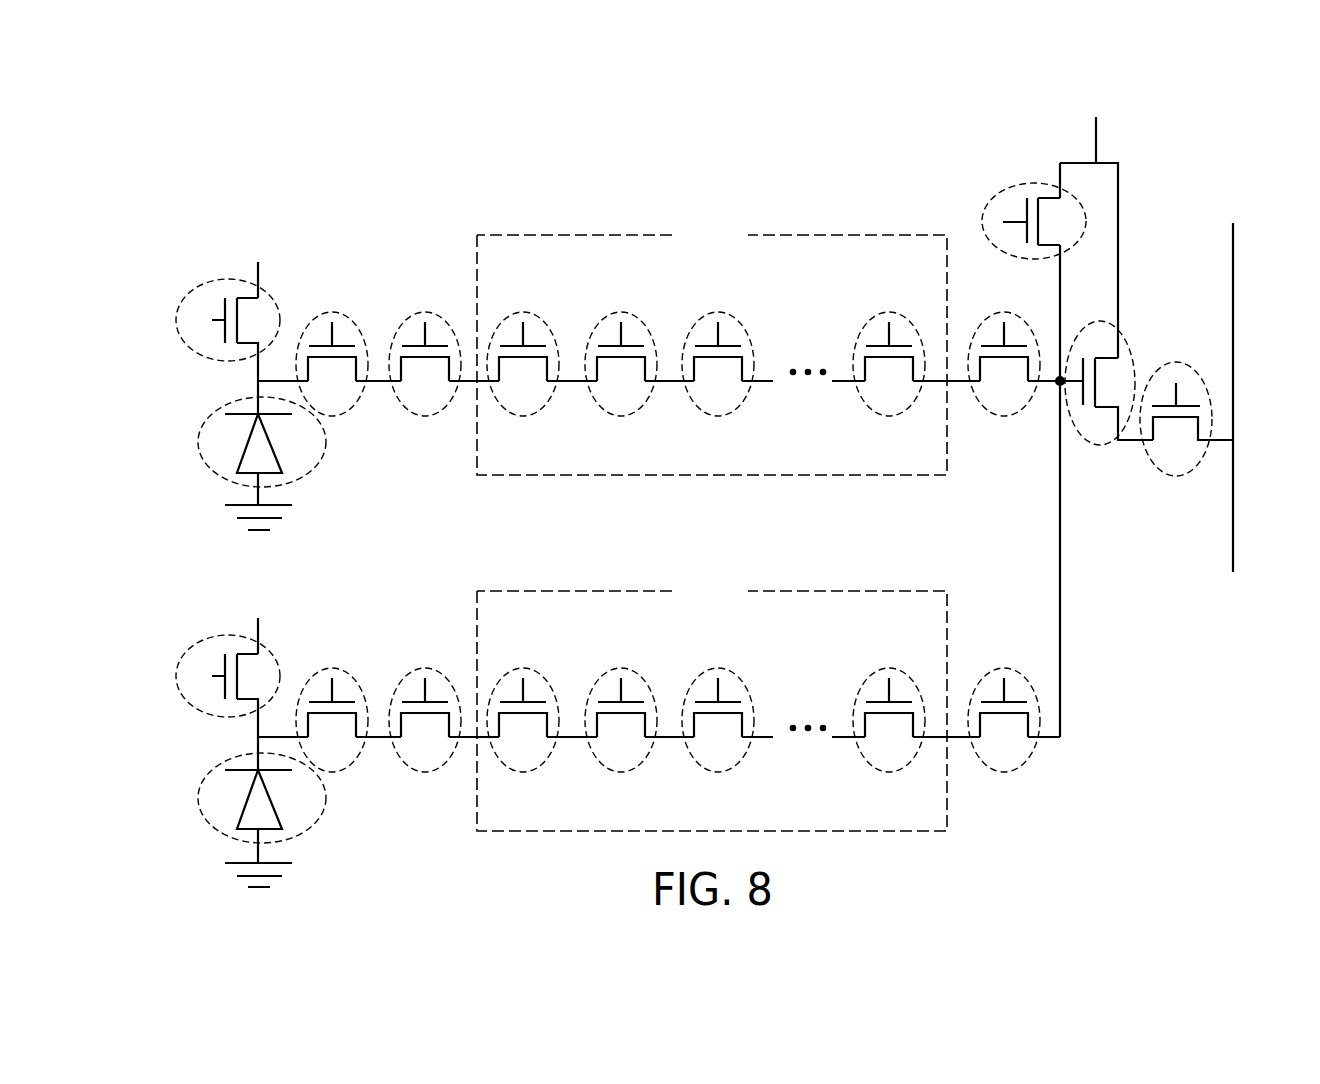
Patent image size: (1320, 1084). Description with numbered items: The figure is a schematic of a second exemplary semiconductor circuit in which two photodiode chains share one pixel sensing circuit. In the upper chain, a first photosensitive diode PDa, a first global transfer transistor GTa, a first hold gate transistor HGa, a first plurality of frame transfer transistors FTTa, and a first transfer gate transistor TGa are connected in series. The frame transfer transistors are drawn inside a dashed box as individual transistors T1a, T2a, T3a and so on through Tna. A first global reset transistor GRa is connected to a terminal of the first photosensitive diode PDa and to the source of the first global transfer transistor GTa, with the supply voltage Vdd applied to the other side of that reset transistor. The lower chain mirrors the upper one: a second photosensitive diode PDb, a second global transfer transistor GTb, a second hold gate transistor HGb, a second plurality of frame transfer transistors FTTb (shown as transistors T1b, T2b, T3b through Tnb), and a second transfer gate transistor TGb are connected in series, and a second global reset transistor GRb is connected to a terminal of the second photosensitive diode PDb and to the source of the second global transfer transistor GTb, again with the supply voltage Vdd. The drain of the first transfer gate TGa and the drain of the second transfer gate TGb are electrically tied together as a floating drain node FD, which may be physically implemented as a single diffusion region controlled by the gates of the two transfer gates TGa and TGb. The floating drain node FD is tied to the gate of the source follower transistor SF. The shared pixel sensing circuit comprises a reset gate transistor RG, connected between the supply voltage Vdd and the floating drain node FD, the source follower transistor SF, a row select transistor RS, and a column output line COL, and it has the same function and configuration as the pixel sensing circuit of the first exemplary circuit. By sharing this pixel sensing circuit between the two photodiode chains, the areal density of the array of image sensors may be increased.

The supply voltage Vdd is at (669, 367).
The first global reset transistor GRa is at (208, 333).
The first photosensitive diode PDa is at (228, 457).
The second global reset transistor GRb is at (208, 689).
The second photosensitive diode PDb is at (228, 813).
The first global transfer transistor GTa is at (362, 310).
The first hold gate transistor HGa is at (453, 310).
The first transfer transistor a T1a is at (548, 312).
The second transfer transistor a T2a is at (645, 312).
The third transfer transistor a T3a is at (742, 312).
The nth transfer transistor a Tna is at (912, 312).
The first transfer gate transistor TGa is at (1032, 310).
The second global transfer transistor GTb is at (362, 666).
The second hold gate transistor HGb is at (453, 666).
The first transfer transistor b T1b is at (548, 668).
The second transfer transistor b T2b is at (645, 668).
The third transfer transistor b T3b is at (742, 668).
The nth transfer transistor b Tnb is at (912, 668).
The second transfer gate transistor TGb is at (1032, 666).
The first plurality of frame transfer transistors FTTa is at (742, 251).
The second plurality of frame transfer transistors FTTb is at (742, 607).
The reset gate transistor RG is at (997, 237).
The source follower transistor SF is at (1102, 445).
The row select transistor RS is at (1198, 377).
The column output line COL is at (1227, 377).
The floating drain node FD is at (1060, 381).